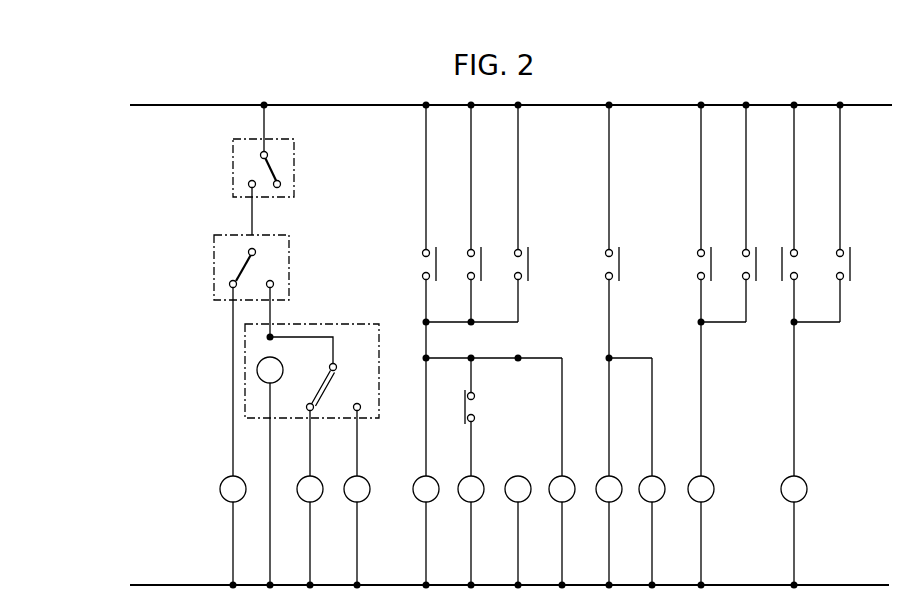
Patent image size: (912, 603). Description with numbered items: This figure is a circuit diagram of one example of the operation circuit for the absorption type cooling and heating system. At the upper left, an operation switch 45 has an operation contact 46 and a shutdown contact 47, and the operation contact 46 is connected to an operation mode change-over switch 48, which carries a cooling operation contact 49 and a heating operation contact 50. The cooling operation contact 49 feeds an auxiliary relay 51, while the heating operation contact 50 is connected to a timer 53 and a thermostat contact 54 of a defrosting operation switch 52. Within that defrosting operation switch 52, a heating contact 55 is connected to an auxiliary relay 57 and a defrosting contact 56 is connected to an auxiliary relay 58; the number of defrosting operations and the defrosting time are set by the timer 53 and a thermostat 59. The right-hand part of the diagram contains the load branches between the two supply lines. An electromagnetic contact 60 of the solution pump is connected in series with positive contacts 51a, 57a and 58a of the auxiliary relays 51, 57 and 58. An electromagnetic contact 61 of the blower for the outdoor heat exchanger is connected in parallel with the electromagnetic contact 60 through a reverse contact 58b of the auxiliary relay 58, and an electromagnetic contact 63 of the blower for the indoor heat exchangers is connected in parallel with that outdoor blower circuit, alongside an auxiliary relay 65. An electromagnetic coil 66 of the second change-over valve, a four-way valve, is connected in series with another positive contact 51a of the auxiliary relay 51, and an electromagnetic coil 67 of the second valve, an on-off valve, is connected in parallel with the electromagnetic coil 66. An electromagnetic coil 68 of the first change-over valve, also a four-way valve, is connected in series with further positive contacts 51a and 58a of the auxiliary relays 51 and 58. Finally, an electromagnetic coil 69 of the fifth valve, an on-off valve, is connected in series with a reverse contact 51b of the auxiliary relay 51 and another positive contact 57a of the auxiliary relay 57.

The operation switch 45 is at (246, 139).
The operation contact 46 is at (248, 184).
The shutdown contact 47 is at (280, 184).
The operation mode change-over switch 48 is at (228, 236).
The cooling operation contact 49 is at (230, 284).
The heating operation contact 50 is at (274, 284).
The auxiliary relay 51 is at (223, 499).
The defrosting operation switch 52 is at (340, 326).
The timer 53 is at (283, 355).
The thermostat contact 54 is at (336, 364).
The heating contact 55 is at (306, 407).
The defrosting contact 56 is at (357, 404).
The auxiliary relay 57 is at (300, 498).
The auxiliary relay 58 is at (346, 498).
The thermostat 59 is at (327, 382).
The electromagnetic contact of the solution pump 60 is at (415, 498).
The electromagnetic contact of the blower for the outdoor heat exchanger 61 is at (465, 498).
The electromagnetic contact of the blower for the indoor heat exchangers 63 is at (508, 498).
The auxiliary relay 65 is at (552, 498).
The electromagnetic coil of the second change-over valve 66 is at (599, 498).
The electromagnetic coil of the second valve 67 is at (642, 498).
The electromagnetic coil of the first change-over valve 68 is at (691, 498).
The electromagnetic coil of the fifth valve 69 is at (784, 497).
The positive contact of the auxiliary relay 51 51a is at (439, 257).
The positive contact of the auxiliary relay 57 57a is at (485, 257).
The positive contact of the auxiliary relay 58 58a is at (544, 244).
The reverse contact of the auxiliary relay 51 51b is at (805, 257).
The reverse contact of the auxiliary relay 58 58b is at (462, 415).